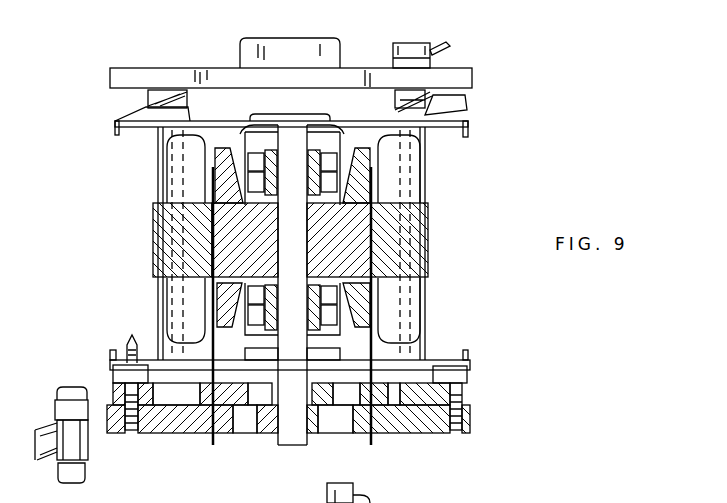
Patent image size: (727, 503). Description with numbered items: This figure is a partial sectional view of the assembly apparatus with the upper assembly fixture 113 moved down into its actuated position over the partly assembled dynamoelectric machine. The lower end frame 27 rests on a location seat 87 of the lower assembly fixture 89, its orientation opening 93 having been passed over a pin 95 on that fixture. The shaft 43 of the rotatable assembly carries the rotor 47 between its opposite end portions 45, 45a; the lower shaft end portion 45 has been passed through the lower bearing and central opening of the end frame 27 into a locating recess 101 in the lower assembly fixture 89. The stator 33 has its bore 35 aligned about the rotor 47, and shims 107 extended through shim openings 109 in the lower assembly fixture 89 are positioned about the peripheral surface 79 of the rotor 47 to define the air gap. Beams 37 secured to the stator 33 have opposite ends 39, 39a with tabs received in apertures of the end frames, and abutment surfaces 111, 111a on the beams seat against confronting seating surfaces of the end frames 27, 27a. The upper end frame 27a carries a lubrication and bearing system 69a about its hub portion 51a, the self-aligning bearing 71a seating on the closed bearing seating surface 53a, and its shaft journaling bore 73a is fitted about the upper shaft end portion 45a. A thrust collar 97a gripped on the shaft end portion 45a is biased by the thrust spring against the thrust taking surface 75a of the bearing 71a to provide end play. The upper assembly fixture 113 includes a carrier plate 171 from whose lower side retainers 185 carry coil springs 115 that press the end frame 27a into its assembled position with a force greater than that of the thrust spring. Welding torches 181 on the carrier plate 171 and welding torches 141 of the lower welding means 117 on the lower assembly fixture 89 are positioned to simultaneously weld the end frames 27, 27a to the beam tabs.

The upper assembly fixture 113 is at (112, 57).
The coil springs 115 is at (148, 119).
The lubrication and bearing system 69a is at (240, 132).
The hub portion 51a is at (253, 130).
The shaft end portion 45a is at (290, 126).
The bearing seating surface 53a is at (327, 130).
The shaft journaling bore 73a is at (273, 128).
The self-aligning bearing 71a is at (316, 127).
The plasma needle arc welding torches 181 is at (418, 92).
The carrier plate 171 is at (476, 70).
The retainers 185 is at (435, 101).
The end frame 27a is at (490, 122).
The abutment surfaces 111a is at (425, 138).
The opposite ends of beams 39a is at (425, 150).
The beams 37 is at (162, 182).
The stator 33 is at (152, 240).
The stator bore 35 is at (210, 249).
The thrust collar 97a is at (242, 190).
The shaft 43 is at (287, 247).
The thrust taking surface 75a is at (346, 190).
The rotor 47 is at (355, 253).
The peripheral surface of rotor 79 is at (368, 257).
The opposite ends of beams 39 is at (433, 330).
The abutment surfaces 111 is at (433, 346).
The orientation opening 93 is at (147, 332).
The pin 95 is at (128, 338).
The location seat 87 is at (113, 370).
The shims 107 is at (208, 437).
The shim openings 109 is at (292, 319).
The locating recess 101 is at (285, 449).
The shaft end portion 45 is at (293, 298).
The end frame 27 is at (486, 363).
The lower assembly fixture 89 is at (490, 427).
The plasma needle arc welding torches 141 is at (72, 387).
The welding means 117 is at (92, 457).